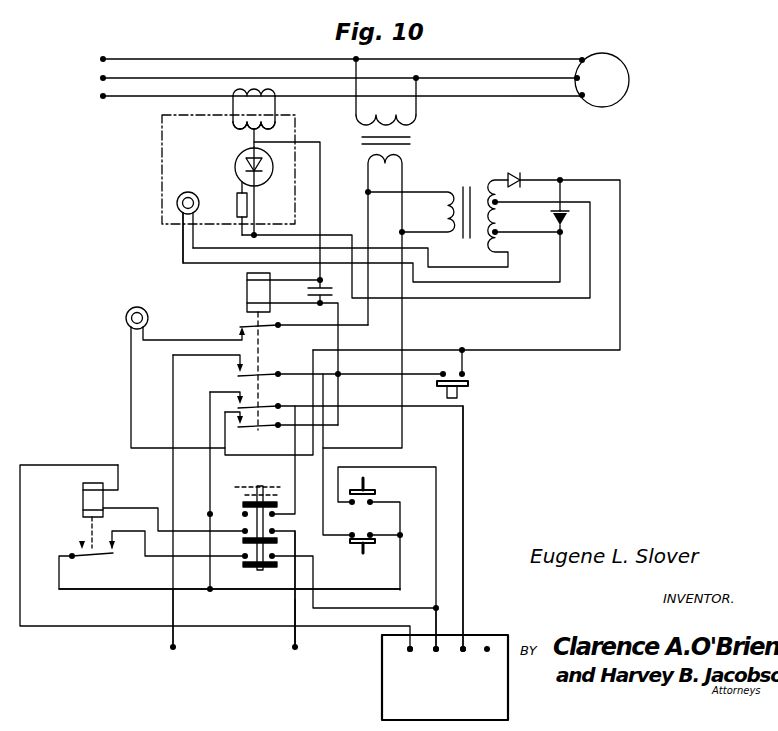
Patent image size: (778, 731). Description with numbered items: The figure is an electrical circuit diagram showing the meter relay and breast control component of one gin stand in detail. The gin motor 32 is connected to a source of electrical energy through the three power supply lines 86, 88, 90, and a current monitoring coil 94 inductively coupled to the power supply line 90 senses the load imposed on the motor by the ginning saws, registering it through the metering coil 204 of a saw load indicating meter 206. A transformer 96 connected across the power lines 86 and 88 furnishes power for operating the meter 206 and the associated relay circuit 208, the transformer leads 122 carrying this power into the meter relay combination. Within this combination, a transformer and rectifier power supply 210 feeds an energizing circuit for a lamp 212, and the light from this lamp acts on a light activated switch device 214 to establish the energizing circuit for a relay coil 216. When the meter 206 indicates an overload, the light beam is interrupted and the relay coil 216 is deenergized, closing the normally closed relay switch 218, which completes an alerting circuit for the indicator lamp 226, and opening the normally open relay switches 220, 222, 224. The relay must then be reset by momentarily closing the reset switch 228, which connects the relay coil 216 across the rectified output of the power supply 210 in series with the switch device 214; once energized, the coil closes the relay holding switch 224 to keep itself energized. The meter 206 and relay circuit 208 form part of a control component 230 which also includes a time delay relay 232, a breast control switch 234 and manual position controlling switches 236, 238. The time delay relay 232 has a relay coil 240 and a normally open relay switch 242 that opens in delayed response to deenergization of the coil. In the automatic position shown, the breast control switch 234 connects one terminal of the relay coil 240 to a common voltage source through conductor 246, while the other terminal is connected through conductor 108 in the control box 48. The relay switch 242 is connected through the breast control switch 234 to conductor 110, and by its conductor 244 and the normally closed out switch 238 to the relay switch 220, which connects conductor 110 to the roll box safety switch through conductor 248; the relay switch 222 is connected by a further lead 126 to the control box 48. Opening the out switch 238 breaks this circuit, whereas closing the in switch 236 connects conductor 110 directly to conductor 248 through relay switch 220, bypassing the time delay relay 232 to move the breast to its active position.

The gin motor 32 is at (604, 54).
The control box 48 is at (382, 688).
The power supply line 86 is at (155, 58).
The power supply line 88 is at (120, 78).
The power supply line 90 is at (122, 97).
The current monitoring coil 94 is at (256, 88).
The transformer 96 is at (424, 139).
The conductor 108 is at (270, 625).
The conductor 110 is at (440, 628).
The transformer leads 122 is at (368, 212).
The lead 126 is at (466, 500).
The metering coil 204 is at (235, 128).
The saw load indicating meter 206 is at (155, 185).
The relay circuit 208 is at (216, 342).
The transformer and rectifier power supply 210 is at (534, 166).
The lamp 212 is at (188, 192).
The light activated switch device 214 is at (272, 186).
The relay coil 216 is at (247, 290).
The normally closed relay switch 218 is at (240, 327).
The normally opened relay switch 220 is at (238, 376).
The normally opened relay switch 222 is at (335, 511).
The relay holding switch 224 is at (248, 427).
The indicator lamp 226 is at (126, 318).
The reset switch 228 is at (460, 397).
The control component 230 is at (673, 181).
The time delay relay 232 is at (131, 500).
The breast control switch 234 is at (290, 478).
The in switch 236 is at (374, 497).
The out switch 238 is at (374, 556).
The relay coil 240 is at (90, 505).
The normally opened relay switch 242 is at (100, 560).
The conductor 244 is at (158, 592).
The conductor 246 is at (296, 636).
The conductor 248 is at (173, 635).